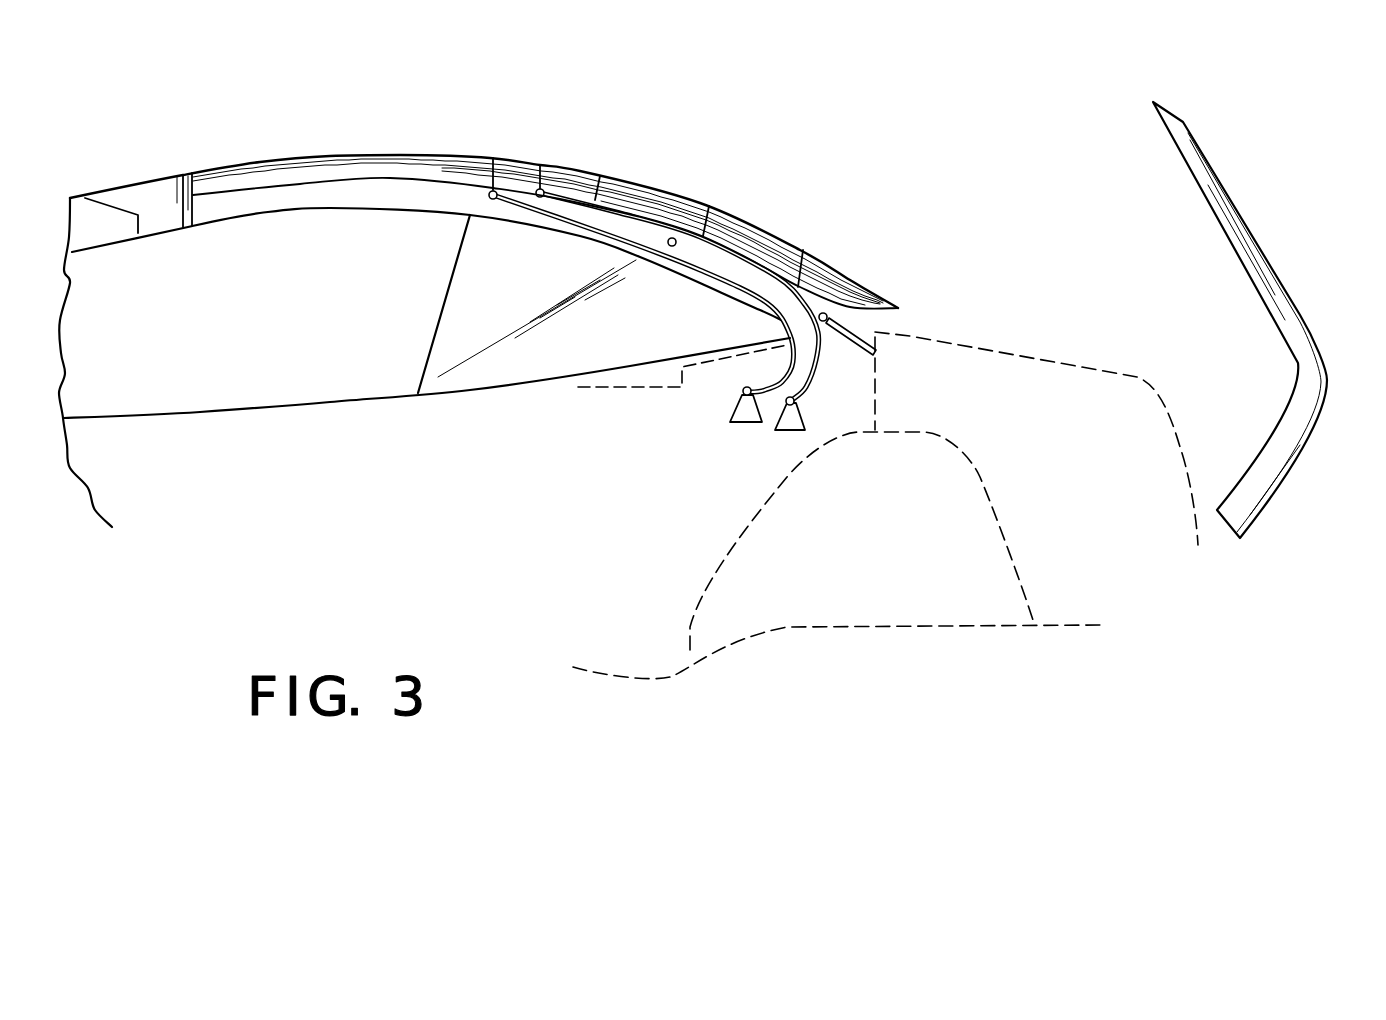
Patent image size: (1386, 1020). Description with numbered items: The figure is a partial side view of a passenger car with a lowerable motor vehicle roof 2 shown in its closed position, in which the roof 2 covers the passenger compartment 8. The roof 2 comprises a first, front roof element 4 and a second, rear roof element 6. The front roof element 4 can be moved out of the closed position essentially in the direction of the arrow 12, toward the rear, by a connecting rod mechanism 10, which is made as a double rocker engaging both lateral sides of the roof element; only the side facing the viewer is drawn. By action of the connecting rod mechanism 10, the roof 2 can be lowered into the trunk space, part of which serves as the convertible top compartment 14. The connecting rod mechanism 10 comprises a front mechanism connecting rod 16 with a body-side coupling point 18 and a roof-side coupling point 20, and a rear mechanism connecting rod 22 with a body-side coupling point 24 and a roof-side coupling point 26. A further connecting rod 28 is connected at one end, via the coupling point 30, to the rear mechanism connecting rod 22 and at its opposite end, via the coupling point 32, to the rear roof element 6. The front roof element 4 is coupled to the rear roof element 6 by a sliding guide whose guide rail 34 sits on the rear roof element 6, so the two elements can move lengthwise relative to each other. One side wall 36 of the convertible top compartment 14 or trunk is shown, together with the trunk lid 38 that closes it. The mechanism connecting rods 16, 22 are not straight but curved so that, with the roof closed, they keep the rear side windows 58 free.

The motor vehicle roof 2 is at (256, 116).
The first roof element 4 is at (337, 170).
The second roof element 6 is at (753, 230).
The passenger compartment 8 is at (301, 341).
The connecting rod mechanism 10 is at (690, 268).
The arrow 12 is at (481, 125).
The convertible top compartment 14 is at (1036, 358).
The front mechanism connecting rod 16 is at (653, 256).
The body-side coupling point 18 is at (747, 392).
The roof-side coupling point 20 is at (493, 157).
The rear mechanism connecting rod 22 is at (633, 193).
The body-side coupling point 24 is at (790, 402).
The roof-side coupling point 26 is at (540, 163).
The connecting rod 28 is at (808, 285).
The coupling point 30 is at (707, 210).
The coupling point 32 is at (829, 312).
The guide rail 34 is at (672, 207).
The side wall 36 is at (1058, 499).
The trunk lid 38 is at (1268, 286).
The rear side windows 58 is at (482, 327).